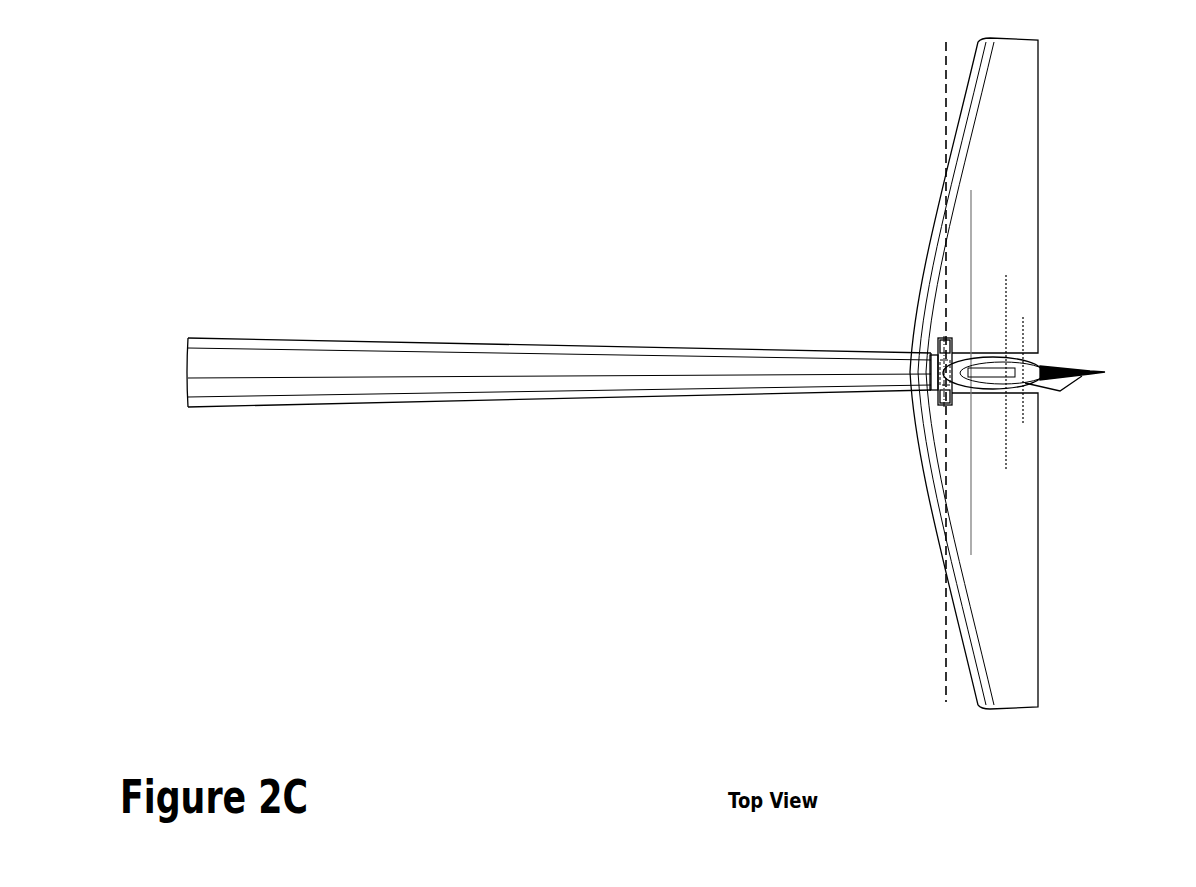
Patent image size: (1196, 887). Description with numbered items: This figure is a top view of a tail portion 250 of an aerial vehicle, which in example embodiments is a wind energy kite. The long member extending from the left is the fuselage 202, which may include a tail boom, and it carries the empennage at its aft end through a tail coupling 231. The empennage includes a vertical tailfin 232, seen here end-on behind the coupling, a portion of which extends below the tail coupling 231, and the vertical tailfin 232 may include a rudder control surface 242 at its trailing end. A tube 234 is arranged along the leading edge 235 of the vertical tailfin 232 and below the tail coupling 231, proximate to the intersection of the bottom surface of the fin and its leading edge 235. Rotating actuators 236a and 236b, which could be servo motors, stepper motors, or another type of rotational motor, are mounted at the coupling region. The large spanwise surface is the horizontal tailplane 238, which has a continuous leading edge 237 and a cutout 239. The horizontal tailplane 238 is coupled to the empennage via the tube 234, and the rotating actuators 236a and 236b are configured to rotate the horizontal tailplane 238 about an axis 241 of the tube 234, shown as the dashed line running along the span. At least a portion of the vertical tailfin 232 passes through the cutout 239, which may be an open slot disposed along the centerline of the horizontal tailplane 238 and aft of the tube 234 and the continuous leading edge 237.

The fuselage 202 is at (470, 401).
The tail coupling 231 is at (928, 367).
The vertical tailfin 232 is at (1030, 362).
The tube 234 is at (938, 388).
The leading edge 235 is at (953, 352).
The rotating actuator 236a is at (937, 341).
The rotating actuator 236b is at (940, 403).
The continuous leading edge 237 is at (943, 406).
The horizontal tailplane 238 is at (993, 554).
The cutout 239 is at (1025, 394).
The axis 241 is at (945, 578).
The rudder control surface 242 is at (1085, 372).
The tail portion 250 is at (523, 240).